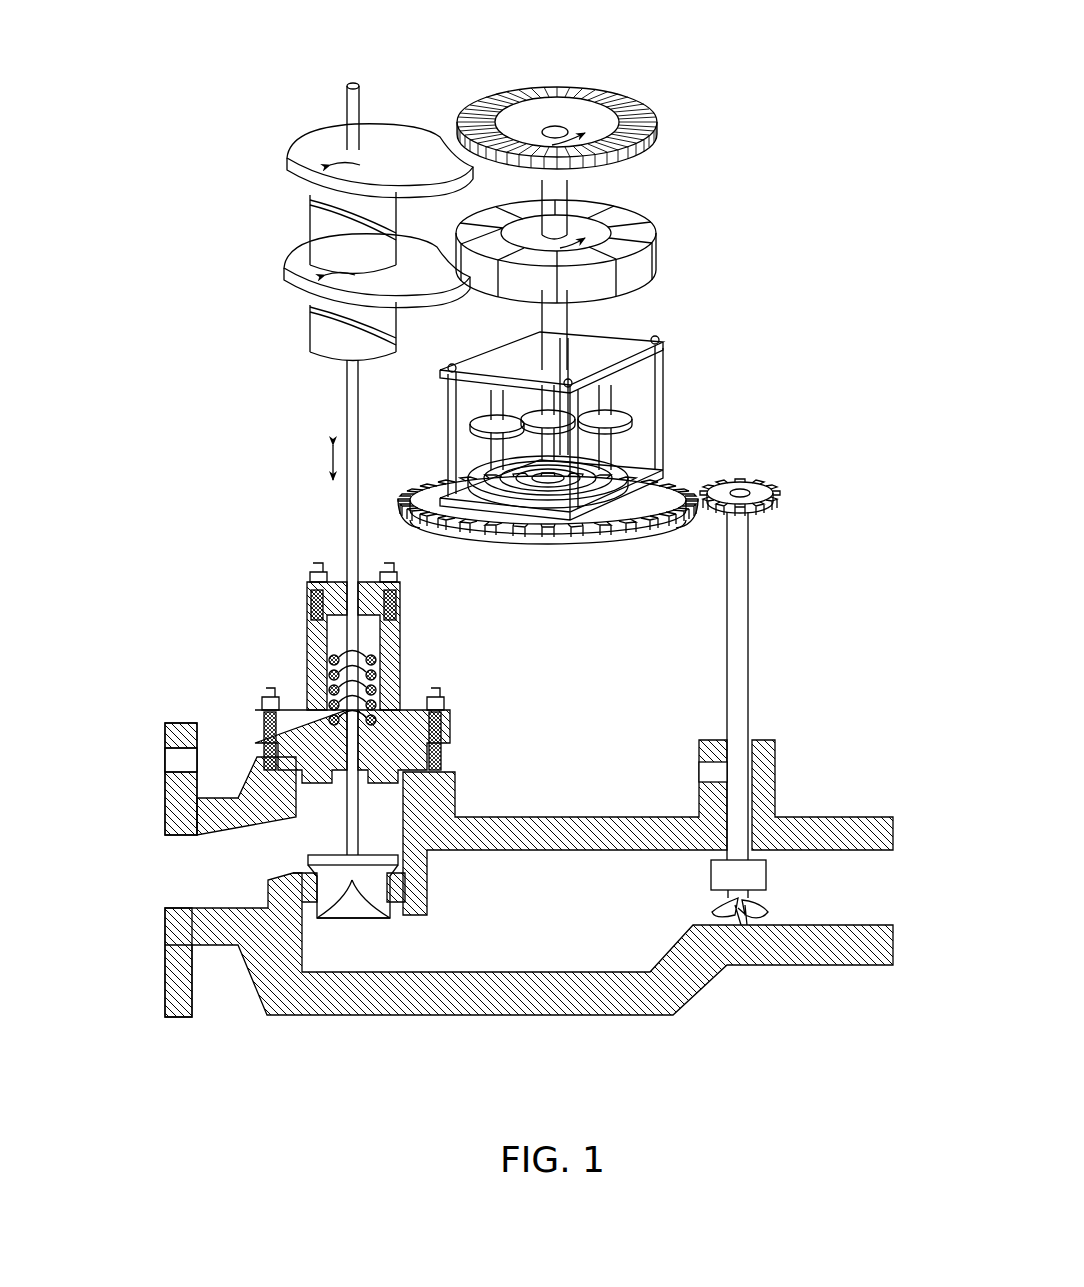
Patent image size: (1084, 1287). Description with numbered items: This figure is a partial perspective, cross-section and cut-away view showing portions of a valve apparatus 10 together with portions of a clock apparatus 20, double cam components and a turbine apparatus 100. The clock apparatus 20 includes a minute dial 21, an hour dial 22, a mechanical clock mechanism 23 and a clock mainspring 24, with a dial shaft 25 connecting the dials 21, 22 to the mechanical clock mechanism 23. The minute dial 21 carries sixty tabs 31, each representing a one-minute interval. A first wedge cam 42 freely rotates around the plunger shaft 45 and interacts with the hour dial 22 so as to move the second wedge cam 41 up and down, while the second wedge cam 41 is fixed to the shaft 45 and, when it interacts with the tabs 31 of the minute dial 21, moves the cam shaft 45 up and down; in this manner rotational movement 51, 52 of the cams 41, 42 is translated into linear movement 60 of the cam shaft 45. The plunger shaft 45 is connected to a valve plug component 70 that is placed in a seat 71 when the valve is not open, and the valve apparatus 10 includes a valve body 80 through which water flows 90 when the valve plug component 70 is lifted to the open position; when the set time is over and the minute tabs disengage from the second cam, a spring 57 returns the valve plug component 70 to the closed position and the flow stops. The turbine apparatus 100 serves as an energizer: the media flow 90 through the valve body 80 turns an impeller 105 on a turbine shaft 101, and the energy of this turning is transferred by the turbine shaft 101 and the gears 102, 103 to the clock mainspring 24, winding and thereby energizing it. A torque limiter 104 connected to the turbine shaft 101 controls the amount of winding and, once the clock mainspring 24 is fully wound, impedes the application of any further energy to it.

The valve apparatus 10 is at (822, 85).
The clock apparatus 20 is at (740, 97).
The minute dial 21 is at (600, 96).
The hour dial 22 is at (648, 270).
The mechanical clock mechanism 23 is at (662, 340).
The clock mainspring 24 is at (488, 472).
The dial shaft 25 is at (585, 183).
The tabs 31 is at (640, 126).
The second wedge cam 41 is at (300, 132).
The first wedge cam 42 is at (300, 262).
The plunger shaft 45 is at (349, 80).
The rotational movement 51 is at (305, 182).
The rotational movement 52 is at (305, 296).
The spring 57 is at (400, 666).
The linear movement 60 is at (333, 462).
The valve plug component 70 is at (298, 848).
The seat 71 is at (390, 900).
The valve body 80 is at (165, 742).
The water flow 90 is at (168, 880).
The turbine apparatus 100 is at (864, 568).
The turbine shaft 101 is at (750, 612).
The gear 102 is at (770, 488).
The gear 103 is at (540, 528).
The torque limiter 104 is at (768, 868).
The impeller 105 is at (750, 926).